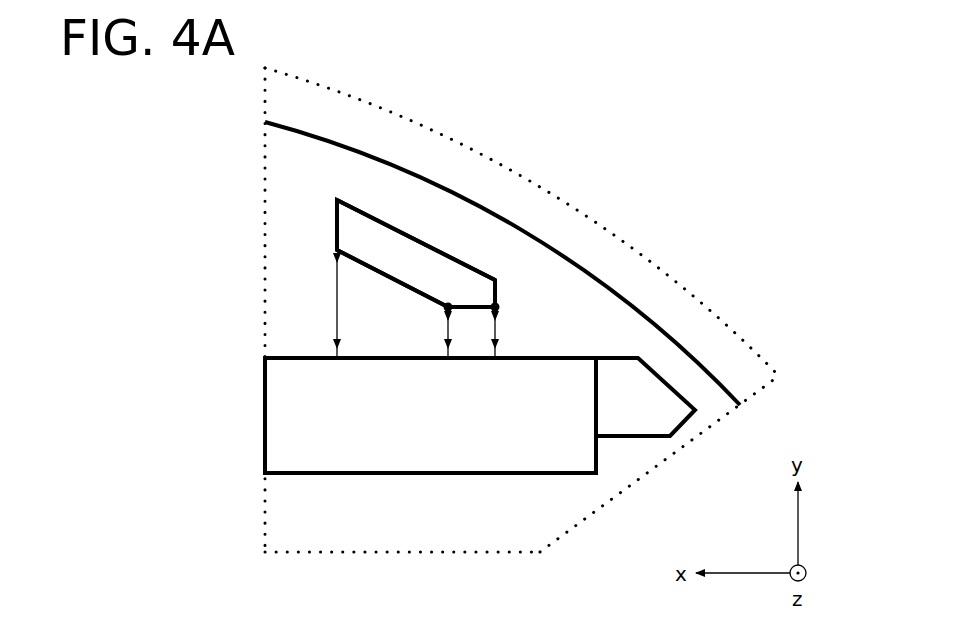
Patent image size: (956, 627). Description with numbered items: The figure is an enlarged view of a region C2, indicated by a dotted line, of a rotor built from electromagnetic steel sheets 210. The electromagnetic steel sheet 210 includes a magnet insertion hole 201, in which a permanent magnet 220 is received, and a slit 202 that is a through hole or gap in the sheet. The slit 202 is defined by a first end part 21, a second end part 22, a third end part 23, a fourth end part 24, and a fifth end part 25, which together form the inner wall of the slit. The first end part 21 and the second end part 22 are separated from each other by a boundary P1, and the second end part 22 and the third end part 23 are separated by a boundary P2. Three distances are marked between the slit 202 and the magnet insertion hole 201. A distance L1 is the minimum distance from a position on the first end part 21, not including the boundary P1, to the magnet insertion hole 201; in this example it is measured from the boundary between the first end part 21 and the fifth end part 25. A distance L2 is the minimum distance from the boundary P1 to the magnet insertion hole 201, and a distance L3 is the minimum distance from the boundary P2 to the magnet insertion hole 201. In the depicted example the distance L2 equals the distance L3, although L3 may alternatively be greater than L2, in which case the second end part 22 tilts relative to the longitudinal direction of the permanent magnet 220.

The region C2 is at (573, 205).
The electromagnetic steel sheet 210 is at (350, 150).
The slit 202 is at (328, 203).
The fourth end part 24 is at (392, 230).
The fifth end part 25 is at (336, 224).
The first end part 21 is at (385, 262).
The third end part 23 is at (494, 285).
The second end part 22 is at (483, 309).
The boundary P1 is at (447, 303).
The boundary P2 is at (499, 306).
The distance L1 is at (335, 302).
The distance L2 is at (446, 330).
The distance L3 is at (498, 330).
The magnet insertion hole 201 is at (432, 476).
The permanent magnet 220 is at (342, 440).